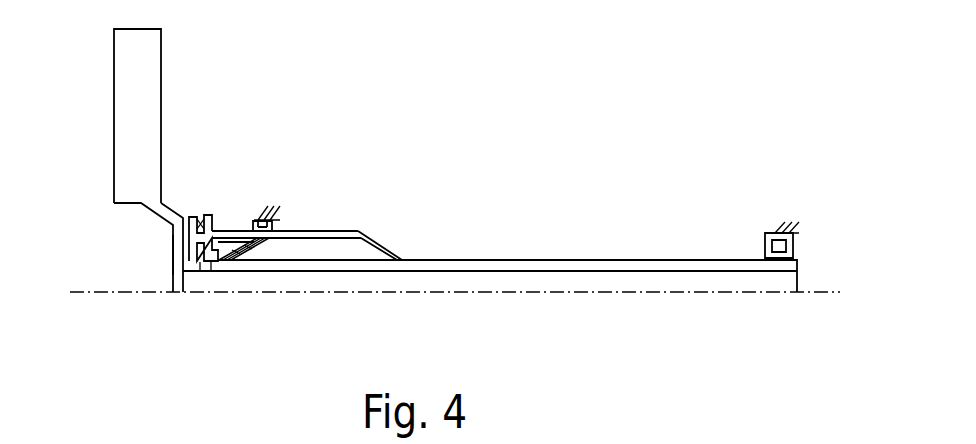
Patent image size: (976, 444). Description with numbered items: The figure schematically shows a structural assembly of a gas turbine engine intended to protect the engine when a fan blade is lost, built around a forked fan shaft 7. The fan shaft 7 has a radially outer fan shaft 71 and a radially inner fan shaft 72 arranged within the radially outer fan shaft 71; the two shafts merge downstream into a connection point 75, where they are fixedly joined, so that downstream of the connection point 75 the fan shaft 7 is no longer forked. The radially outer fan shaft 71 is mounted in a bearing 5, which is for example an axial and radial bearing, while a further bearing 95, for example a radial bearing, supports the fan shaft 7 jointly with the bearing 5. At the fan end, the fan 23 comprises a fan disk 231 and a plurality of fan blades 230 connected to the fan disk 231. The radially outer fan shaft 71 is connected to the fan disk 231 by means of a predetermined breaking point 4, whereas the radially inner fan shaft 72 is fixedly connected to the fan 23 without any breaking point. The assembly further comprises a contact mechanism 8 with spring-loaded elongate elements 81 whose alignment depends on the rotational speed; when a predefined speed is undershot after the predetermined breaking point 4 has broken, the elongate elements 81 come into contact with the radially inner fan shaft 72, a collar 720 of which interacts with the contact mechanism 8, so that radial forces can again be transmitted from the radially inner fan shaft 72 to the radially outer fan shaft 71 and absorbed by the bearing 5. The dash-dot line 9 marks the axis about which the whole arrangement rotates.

The fan 23 is at (130, 97).
The fan blades 230 is at (125, 162).
The fan disk 231 is at (175, 247).
The predetermined breaking point 4 is at (196, 217).
The bearing 5 is at (263, 210).
The fan shaft 7 is at (708, 258).
The radially outer fan shaft 71 is at (315, 232).
The radially inner fan shaft 72 is at (327, 262).
The connection point 75 is at (393, 262).
The collar 720 is at (205, 263).
The contact mechanism 8 is at (256, 250).
The spring-loaded elongate elements 81 is at (223, 262).
The rotation axis 9 is at (718, 292).
The further bearing 95 is at (770, 231).